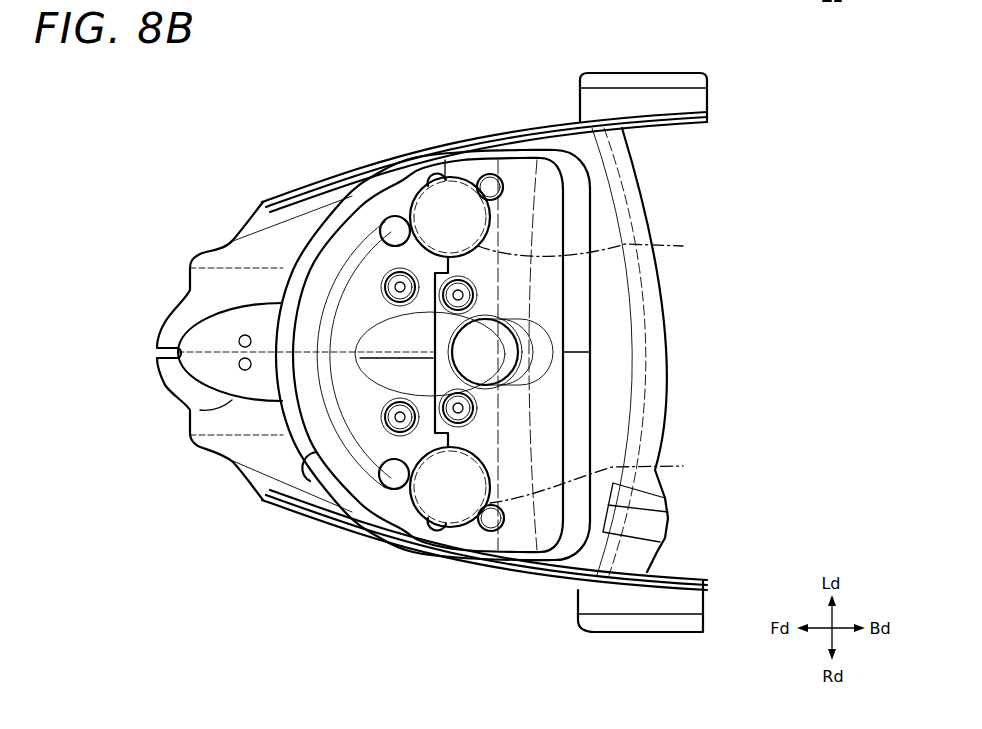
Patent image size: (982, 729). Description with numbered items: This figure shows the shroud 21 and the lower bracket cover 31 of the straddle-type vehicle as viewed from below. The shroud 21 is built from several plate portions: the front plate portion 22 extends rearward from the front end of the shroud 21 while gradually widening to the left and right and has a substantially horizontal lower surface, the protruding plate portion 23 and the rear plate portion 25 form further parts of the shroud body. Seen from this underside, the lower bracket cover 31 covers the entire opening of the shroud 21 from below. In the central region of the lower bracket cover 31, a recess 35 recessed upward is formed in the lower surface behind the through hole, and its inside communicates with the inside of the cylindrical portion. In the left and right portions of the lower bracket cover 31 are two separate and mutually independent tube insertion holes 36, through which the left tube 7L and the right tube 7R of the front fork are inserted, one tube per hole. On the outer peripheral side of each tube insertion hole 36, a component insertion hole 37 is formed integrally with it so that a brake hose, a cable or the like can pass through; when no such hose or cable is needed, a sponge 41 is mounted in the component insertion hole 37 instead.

The shroud 21 is at (276, 190).
The front plate portion 22 is at (195, 410).
The protruding plate portion 23 is at (313, 482).
The rear plate portion 25 is at (607, 357).
The lower bracket cover 31 is at (567, 179).
The recess 35 is at (541, 352).
The tube insertion hole 36 is at (425, 182).
The component insertion hole 37 is at (490, 176).
The sponge 41 is at (396, 228).
The left tube 7L is at (594, 248).
The right tube 7R is at (600, 479).